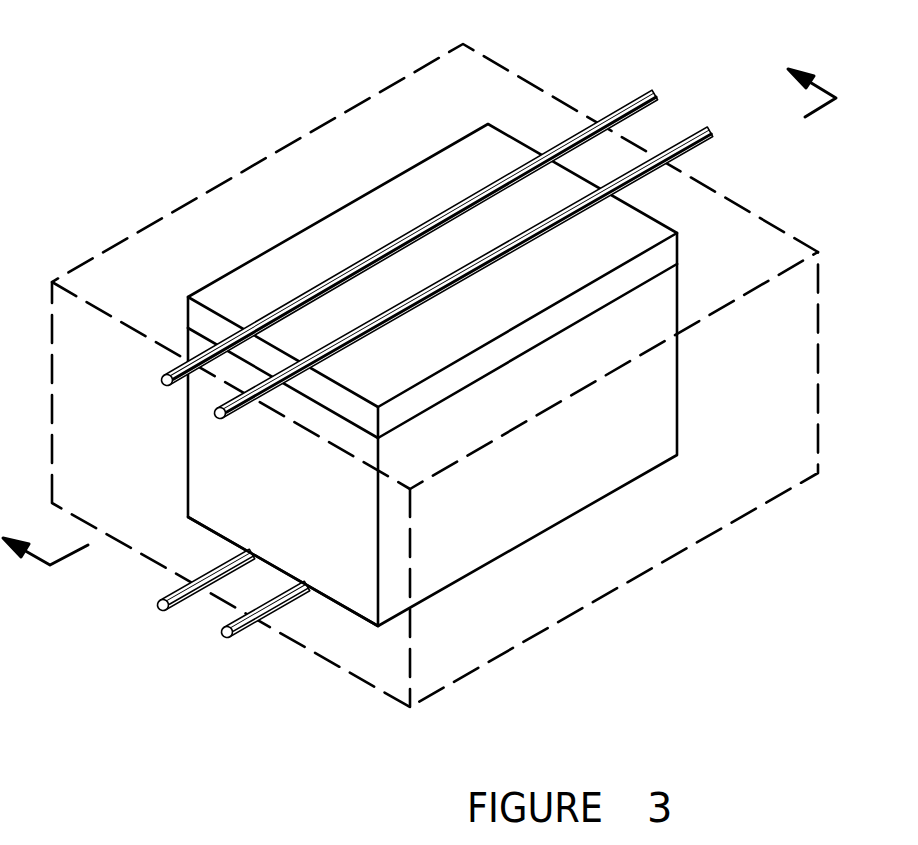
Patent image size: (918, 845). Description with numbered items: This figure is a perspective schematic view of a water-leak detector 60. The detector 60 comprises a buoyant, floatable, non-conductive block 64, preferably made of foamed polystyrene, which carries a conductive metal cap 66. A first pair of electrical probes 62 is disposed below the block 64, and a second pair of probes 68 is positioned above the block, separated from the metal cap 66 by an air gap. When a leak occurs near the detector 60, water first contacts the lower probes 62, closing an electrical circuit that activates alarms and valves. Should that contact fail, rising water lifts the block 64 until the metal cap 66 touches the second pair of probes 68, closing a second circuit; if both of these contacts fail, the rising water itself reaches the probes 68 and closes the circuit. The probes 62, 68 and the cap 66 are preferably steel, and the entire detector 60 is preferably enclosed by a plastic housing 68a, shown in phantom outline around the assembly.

The water-leak detector 60 is at (420, 365).
The first pair of electrical probes 62 is at (178, 598).
The buoyant, floatable, non-conductive block 64 is at (678, 407).
The conductive metal cap 66 is at (678, 252).
The second pair of electrical probes 68 is at (634, 92).
The plastic housing 68a is at (205, 192).